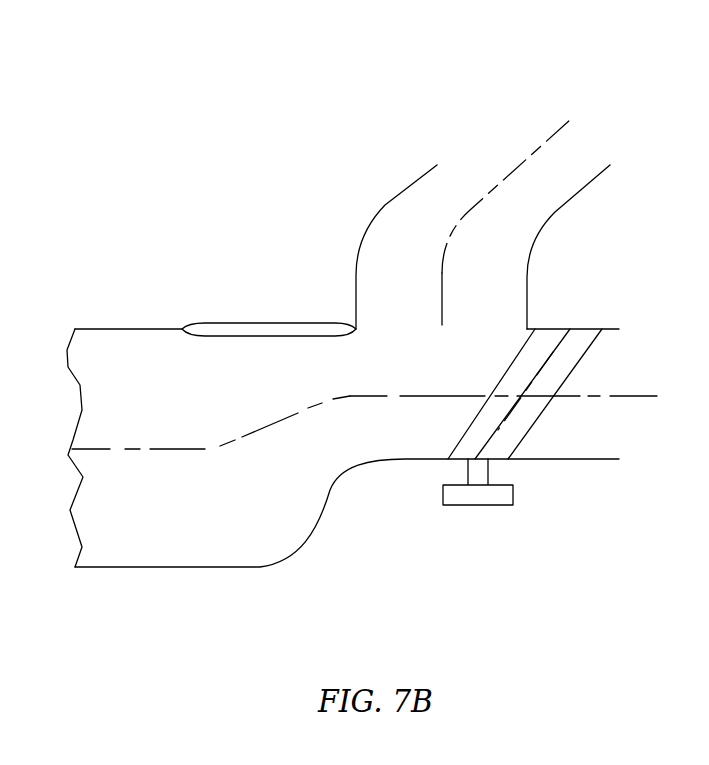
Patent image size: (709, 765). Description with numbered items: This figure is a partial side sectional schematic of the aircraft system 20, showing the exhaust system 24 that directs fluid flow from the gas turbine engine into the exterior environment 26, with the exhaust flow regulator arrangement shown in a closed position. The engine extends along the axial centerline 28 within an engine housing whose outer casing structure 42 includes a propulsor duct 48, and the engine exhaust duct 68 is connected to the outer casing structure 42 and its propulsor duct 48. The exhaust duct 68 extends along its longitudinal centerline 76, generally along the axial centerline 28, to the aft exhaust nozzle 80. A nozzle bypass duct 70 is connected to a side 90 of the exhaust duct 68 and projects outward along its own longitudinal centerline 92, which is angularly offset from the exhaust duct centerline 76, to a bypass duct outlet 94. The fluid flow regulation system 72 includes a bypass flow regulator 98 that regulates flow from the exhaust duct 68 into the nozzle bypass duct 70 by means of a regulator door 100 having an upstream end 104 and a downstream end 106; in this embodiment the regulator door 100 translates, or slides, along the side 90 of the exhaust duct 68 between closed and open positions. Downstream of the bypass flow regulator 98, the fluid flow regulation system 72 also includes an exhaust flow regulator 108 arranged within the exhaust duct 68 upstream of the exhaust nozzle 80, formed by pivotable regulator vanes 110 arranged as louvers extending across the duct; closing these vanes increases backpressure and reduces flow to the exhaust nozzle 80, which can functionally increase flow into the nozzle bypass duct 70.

The fluid system 20 is at (173, 97).
The exhaust system 24 is at (293, 155).
The exterior environment 26 is at (686, 198).
The axial centerline 28 is at (99, 449).
The outer casing structure 42 is at (128, 322).
The propulsor duct 48 is at (90, 329).
The engine exhaust duct 68 is at (248, 583).
The nozzle bypass duct 70 is at (395, 192).
The fluid flow regulation system 72 is at (575, 303).
The longitudinal centerline 76 is at (257, 437).
The exhaust nozzle 80 is at (612, 360).
The side 90 is at (552, 329).
The longitudinal centerline 92 is at (560, 127).
The bypass duct outlet 94 is at (467, 178).
The bypass flow regulator 98 is at (357, 350).
The regulator door 100 is at (295, 323).
The upstream end 104 is at (182, 325).
The downstream end 106 is at (357, 330).
The exhaust flow regulator 108 is at (548, 426).
The regulator vanes 110 is at (473, 417).